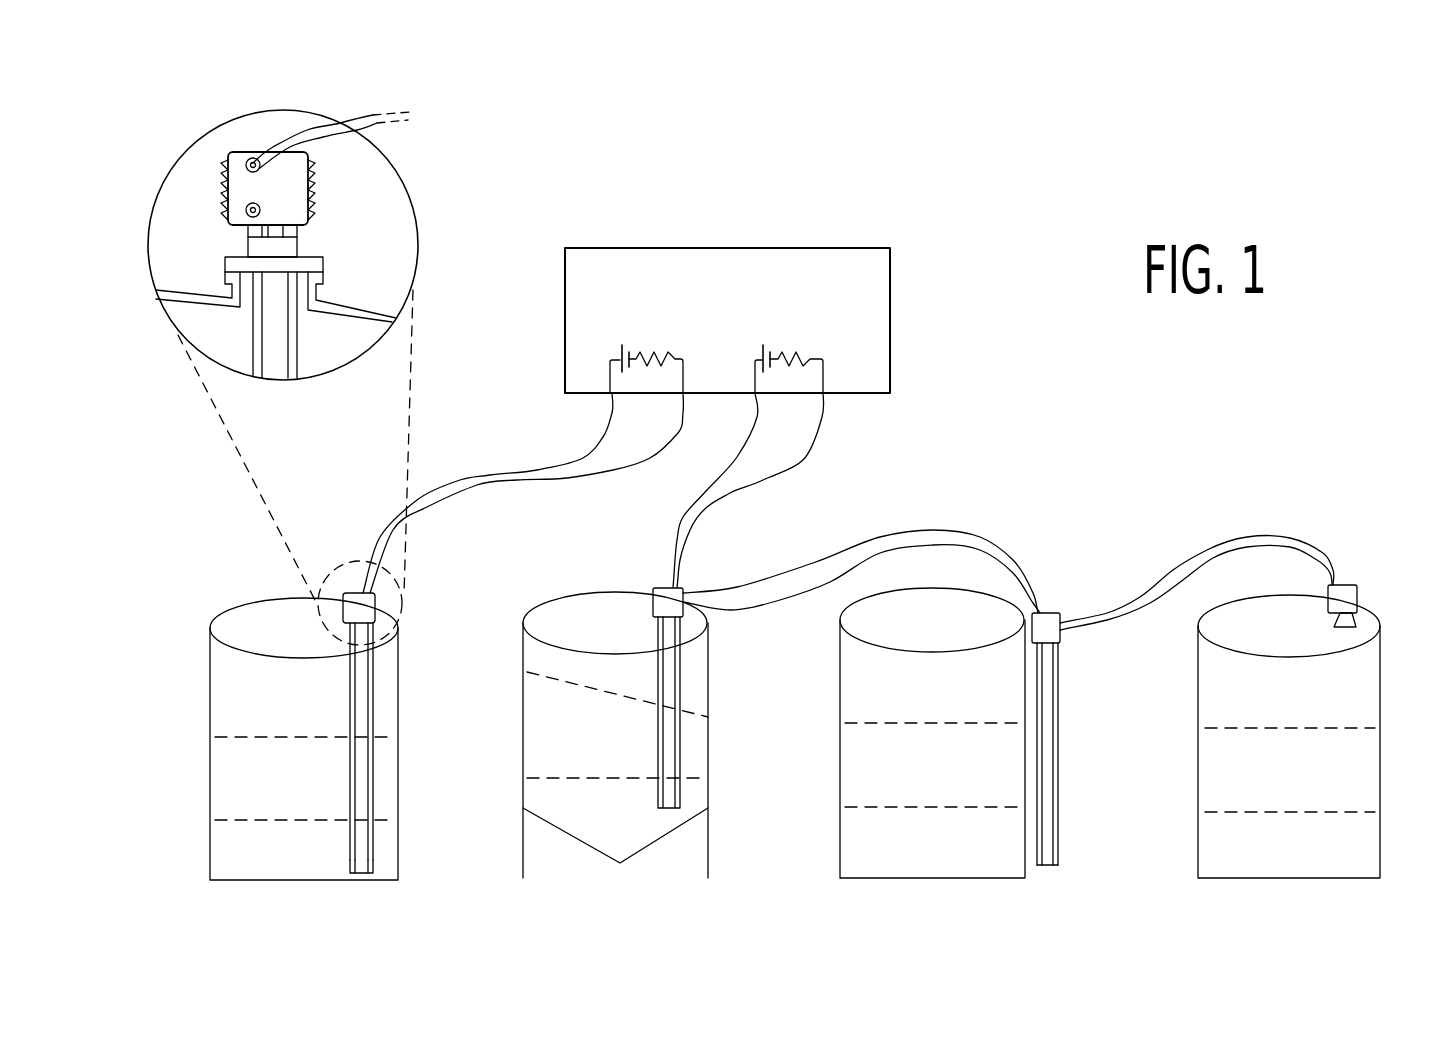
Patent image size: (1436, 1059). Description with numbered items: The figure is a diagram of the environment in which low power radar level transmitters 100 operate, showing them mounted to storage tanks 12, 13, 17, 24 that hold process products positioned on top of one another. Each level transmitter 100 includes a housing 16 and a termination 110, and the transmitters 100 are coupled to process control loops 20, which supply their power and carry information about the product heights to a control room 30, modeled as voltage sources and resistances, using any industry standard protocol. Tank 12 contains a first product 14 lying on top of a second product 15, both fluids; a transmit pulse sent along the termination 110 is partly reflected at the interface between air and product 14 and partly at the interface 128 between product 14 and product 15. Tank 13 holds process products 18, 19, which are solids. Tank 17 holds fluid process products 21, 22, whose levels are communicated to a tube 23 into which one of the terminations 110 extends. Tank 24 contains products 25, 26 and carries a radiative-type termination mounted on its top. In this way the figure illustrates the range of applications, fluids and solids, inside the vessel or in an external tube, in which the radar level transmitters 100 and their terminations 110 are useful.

The storage tank 12 is at (210, 672).
The storage tank 13 is at (708, 745).
The first product 14 is at (270, 784).
The second product 15 is at (285, 862).
The housing 16 is at (254, 158).
The storage tank 17 is at (840, 847).
The process product 18 is at (605, 741).
The process product 19 is at (621, 825).
The process control loop 20 is at (375, 122).
The process product 21 is at (940, 766).
The process product 22 is at (940, 857).
The tube 23 is at (1058, 673).
The storage tank 24 is at (1380, 668).
The process product 25 is at (1298, 774).
The process product 26 is at (1298, 855).
The control room 30 is at (869, 321).
The level transmitter 100 is at (333, 192).
The termination 110 is at (305, 327).
The interface 128 is at (380, 818).